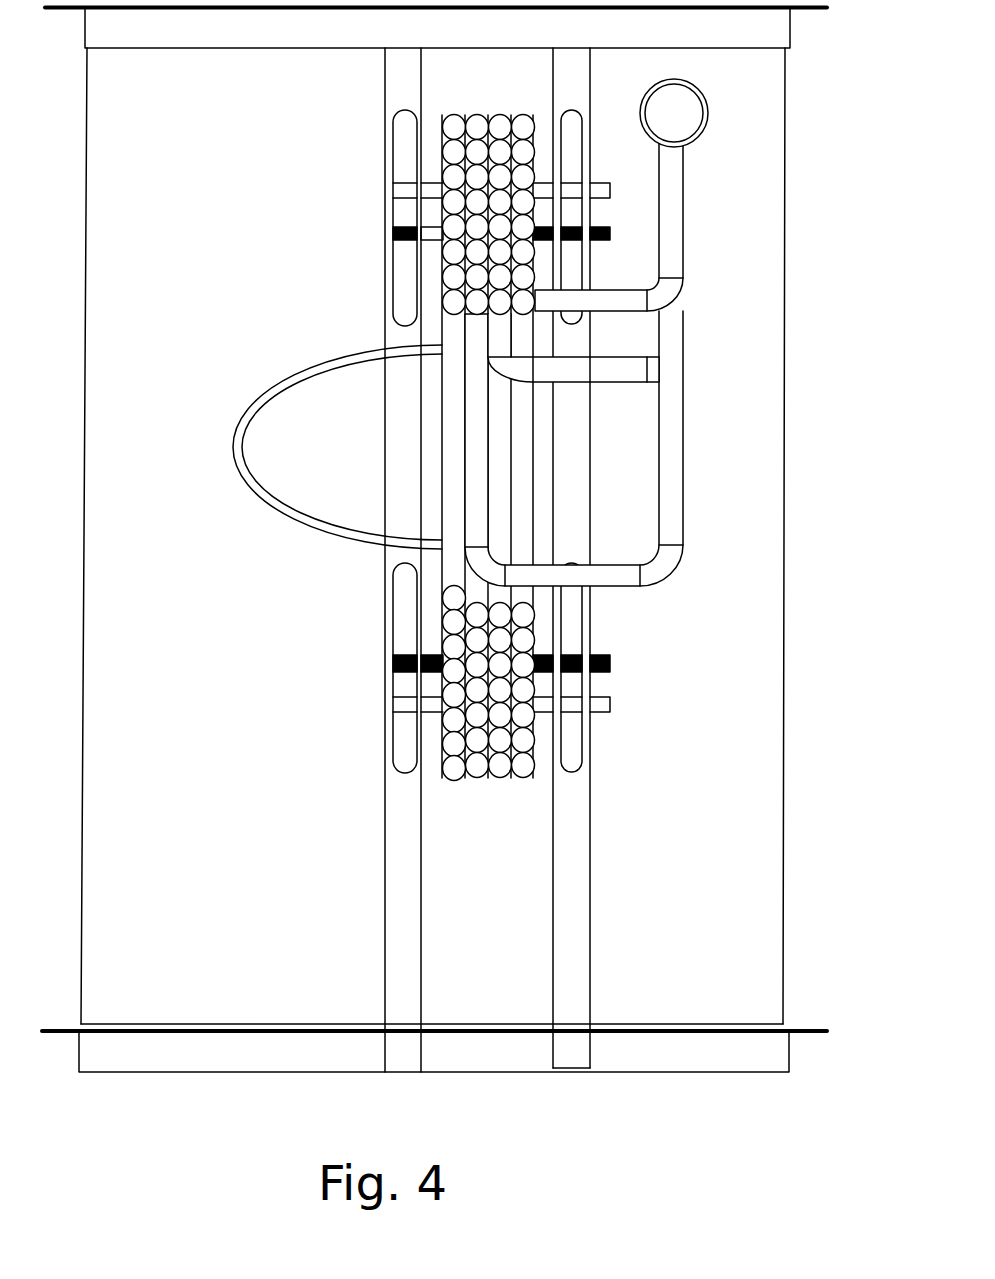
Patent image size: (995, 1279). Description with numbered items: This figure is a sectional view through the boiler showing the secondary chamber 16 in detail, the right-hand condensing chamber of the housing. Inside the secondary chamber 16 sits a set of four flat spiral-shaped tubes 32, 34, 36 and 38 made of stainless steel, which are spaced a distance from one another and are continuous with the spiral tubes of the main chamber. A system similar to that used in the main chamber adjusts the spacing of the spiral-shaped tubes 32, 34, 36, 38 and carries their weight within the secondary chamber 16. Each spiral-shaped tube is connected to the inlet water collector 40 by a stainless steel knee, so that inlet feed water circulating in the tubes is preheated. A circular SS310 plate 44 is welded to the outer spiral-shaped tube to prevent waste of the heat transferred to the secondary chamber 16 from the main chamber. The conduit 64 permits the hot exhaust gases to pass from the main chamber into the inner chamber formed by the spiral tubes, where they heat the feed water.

The secondary chamber 16 is at (770, 220).
The spiral-shaped tube 32 is at (522, 778).
The spiral-shaped tube 34 is at (495, 780).
The spiral-shaped tube 36 is at (475, 781).
The spiral-shaped tube 38 is at (452, 781).
The inlet water collector 40 is at (708, 125).
The circular plate 44 is at (590, 477).
The conduit 64 is at (255, 493).